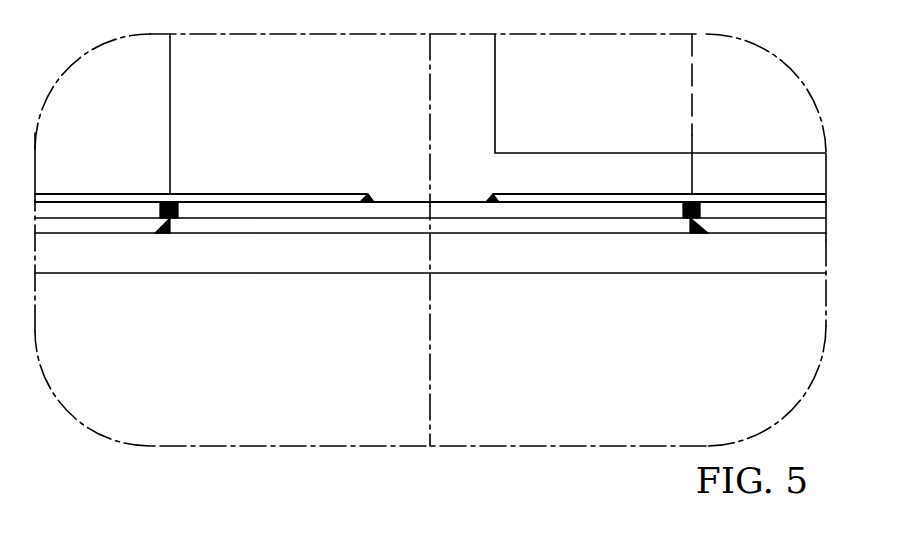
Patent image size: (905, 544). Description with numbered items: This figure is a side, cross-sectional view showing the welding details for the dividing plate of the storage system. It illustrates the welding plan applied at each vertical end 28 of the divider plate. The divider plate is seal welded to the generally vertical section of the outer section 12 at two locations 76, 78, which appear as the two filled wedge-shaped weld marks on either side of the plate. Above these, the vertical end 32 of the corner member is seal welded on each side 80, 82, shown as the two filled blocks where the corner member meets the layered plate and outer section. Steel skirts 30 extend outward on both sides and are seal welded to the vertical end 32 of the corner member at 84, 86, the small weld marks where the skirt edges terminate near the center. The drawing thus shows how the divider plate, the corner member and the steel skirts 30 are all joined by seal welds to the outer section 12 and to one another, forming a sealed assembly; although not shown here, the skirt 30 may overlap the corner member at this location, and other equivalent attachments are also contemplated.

The outer section 12 is at (283, 263).
The vertical end of the divider plate 28 is at (458, 228).
The steel skirt 30 is at (236, 194).
The vertical end of the corner member 32 is at (535, 213).
The seal weld of divider plate to vertical section 76 is at (698, 234).
The seal weld of divider plate to vertical section 78 is at (163, 235).
The seal weld on side of corner member vertical end 80 is at (683, 210).
The seal weld on side of corner member vertical end 82 is at (161, 202).
The seal weld of steel skirt to corner member 84 is at (368, 192).
The seal weld of steel skirt to corner member 86 is at (491, 194).